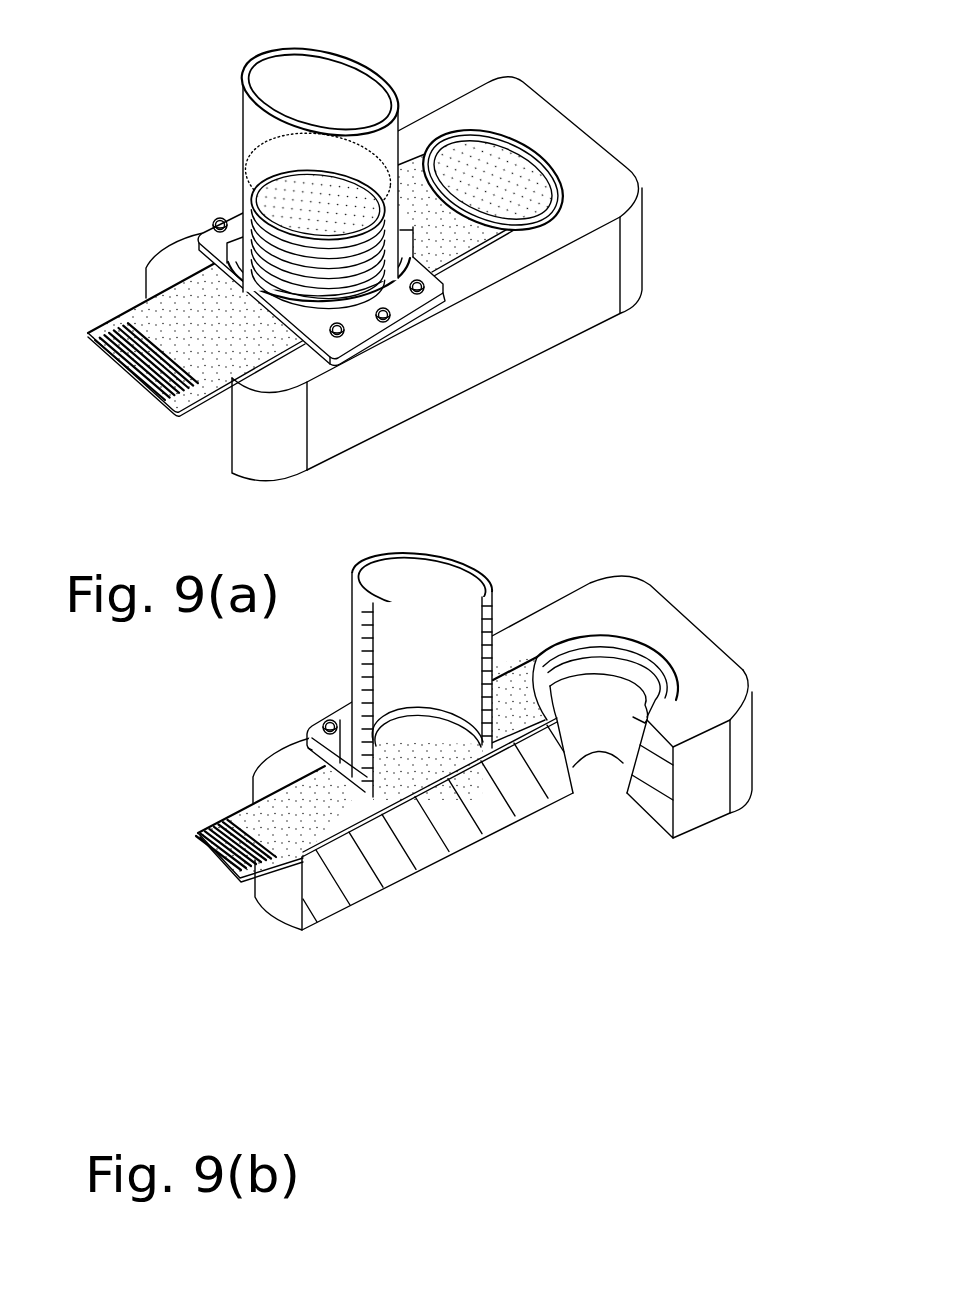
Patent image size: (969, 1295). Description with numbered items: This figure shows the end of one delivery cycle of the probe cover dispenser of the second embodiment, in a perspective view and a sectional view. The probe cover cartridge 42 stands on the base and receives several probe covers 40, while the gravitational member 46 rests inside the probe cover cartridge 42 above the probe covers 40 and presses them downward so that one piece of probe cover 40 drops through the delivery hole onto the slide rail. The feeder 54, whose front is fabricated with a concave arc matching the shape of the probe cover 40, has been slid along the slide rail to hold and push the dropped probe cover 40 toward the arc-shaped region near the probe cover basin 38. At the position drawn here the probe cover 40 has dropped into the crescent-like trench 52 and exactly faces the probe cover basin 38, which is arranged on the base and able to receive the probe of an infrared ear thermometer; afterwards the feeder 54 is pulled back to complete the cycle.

In FIG. 9B, the probe cover basin 38 is at (582, 700).
In FIG. 9A, the probe cover 40 is at (262, 243).
In FIG. 9A, the probe cover cartridge 42 is at (254, 121).
In FIG. 9A, the gravitational member 46 is at (332, 155).
In FIG. 9B, the crescent-like trench 52 is at (590, 636).
In FIG. 9A, the feeder 54 is at (200, 357).